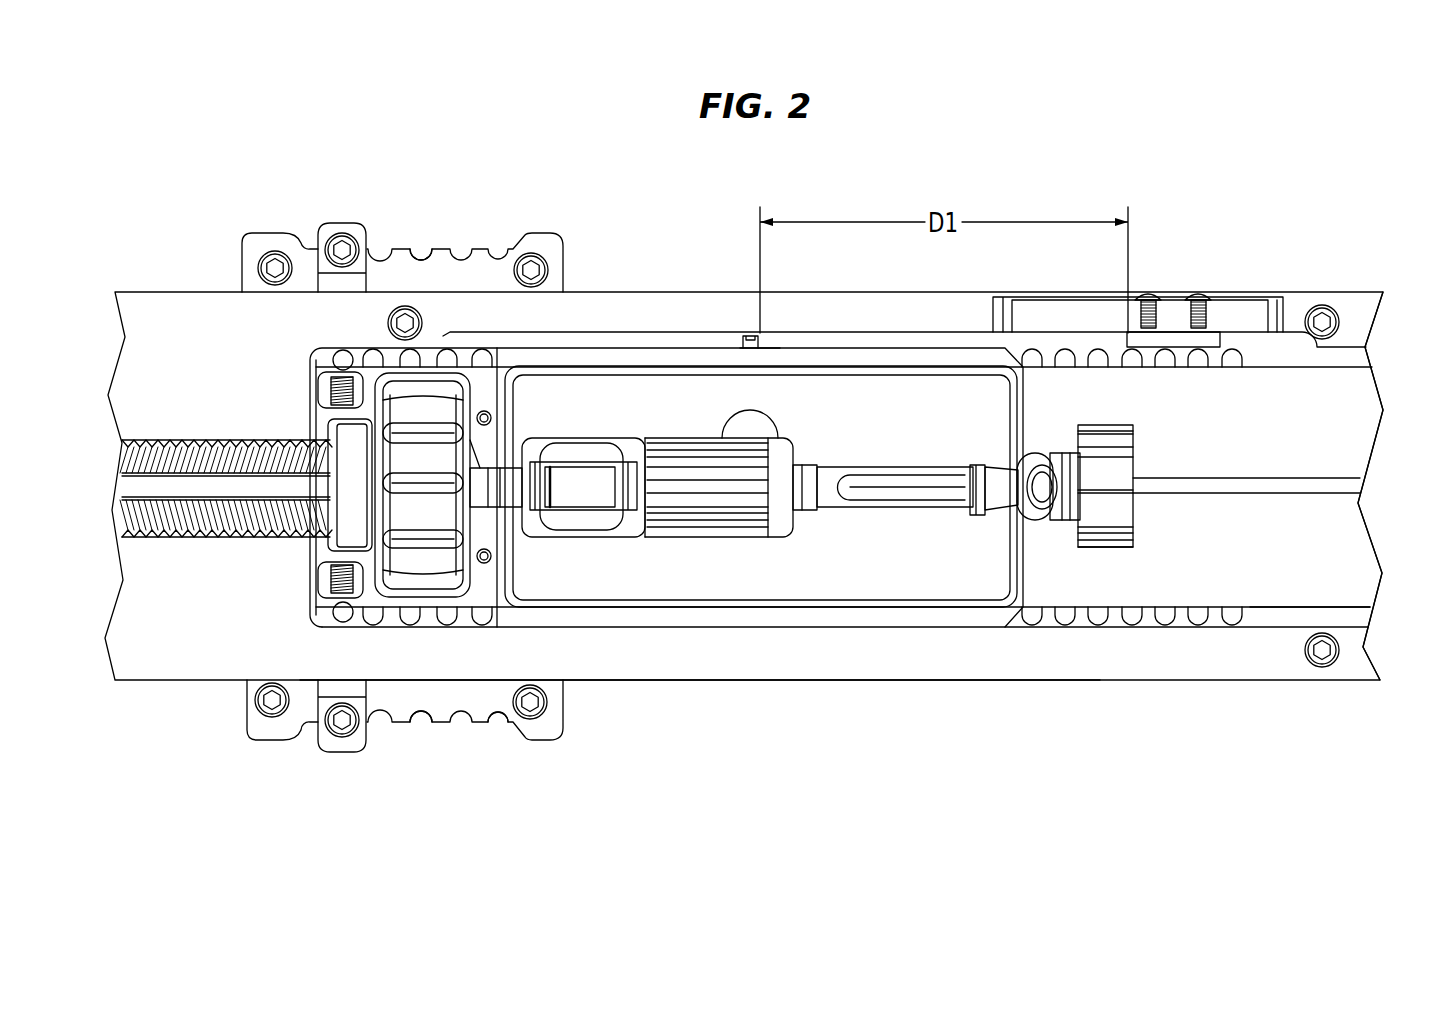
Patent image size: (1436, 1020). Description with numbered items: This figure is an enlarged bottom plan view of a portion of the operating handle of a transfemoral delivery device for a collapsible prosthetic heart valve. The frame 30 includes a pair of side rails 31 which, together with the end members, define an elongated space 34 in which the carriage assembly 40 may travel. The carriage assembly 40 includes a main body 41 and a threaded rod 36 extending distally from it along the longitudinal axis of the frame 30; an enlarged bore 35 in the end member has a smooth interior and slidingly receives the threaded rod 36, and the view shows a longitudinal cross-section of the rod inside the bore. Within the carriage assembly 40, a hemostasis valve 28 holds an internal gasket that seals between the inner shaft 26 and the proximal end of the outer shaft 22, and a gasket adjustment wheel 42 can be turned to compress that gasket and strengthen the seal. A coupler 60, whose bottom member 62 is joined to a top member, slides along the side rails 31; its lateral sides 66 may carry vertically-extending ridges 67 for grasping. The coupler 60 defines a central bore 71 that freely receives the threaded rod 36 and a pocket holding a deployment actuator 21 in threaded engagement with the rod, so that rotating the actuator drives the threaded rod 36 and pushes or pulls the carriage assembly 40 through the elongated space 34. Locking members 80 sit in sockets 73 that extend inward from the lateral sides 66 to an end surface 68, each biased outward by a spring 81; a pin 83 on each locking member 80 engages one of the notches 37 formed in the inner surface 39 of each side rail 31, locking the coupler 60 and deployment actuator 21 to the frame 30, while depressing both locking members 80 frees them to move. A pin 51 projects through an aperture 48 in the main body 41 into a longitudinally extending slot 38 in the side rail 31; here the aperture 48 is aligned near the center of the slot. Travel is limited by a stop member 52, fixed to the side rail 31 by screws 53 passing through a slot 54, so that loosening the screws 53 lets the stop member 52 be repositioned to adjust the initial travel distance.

The deployment actuator 21 is at (339, 502).
The outer shaft 22 is at (122, 487).
The inner shaft 26 is at (1208, 495).
The hemostasis valve 28 is at (925, 490).
The frame 30 is at (198, 688).
The side rails 31 is at (1020, 682).
The elongated space 34 is at (1355, 452).
The enlarged bore 35 is at (190, 440).
The threaded rod 36 is at (130, 440).
The notches 37 is at (1092, 622).
The slot 38 is at (448, 334).
The inner surface 39 is at (1308, 606).
The carriage assembly 40 is at (733, 633).
The main body 41 is at (806, 575).
The gasket adjustment wheel 42 is at (1122, 548).
The aperture 48 is at (760, 348).
The pin 51 is at (745, 345).
The stop member 52 is at (1182, 347).
The screws 53 is at (1195, 297).
The slot 54 is at (1257, 322).
The coupler 60 is at (572, 710).
The bottom member 62 is at (474, 285).
The lateral sides 66 is at (433, 733).
The ridges 67 is at (503, 725).
The end surface 68 is at (330, 394).
The central bore 71 is at (485, 452).
The socket 73 is at (370, 283).
The locking members 80 is at (343, 226).
The spring 81 is at (325, 368).
The pin 83 is at (340, 615).